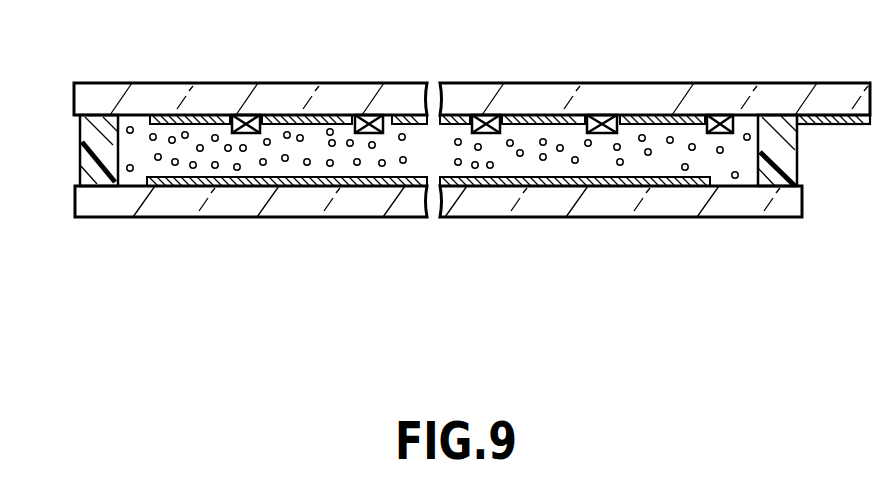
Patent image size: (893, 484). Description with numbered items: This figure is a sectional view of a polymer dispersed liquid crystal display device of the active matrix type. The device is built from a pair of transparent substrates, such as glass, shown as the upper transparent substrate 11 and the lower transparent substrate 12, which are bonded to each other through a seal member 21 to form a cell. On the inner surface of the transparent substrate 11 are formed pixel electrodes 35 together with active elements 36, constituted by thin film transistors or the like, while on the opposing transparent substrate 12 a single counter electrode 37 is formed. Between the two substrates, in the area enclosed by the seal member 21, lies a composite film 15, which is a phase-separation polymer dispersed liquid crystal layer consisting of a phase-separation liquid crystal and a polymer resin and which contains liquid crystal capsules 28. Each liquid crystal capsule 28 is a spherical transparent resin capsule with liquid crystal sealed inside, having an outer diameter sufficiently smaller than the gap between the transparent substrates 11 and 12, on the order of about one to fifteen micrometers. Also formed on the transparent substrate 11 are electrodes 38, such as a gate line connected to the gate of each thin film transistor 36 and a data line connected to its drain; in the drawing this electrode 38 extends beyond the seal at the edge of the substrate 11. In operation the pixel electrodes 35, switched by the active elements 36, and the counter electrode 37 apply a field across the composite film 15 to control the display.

The transparent substrate 11 is at (778, 95).
The transparent substrate 12 is at (717, 210).
The composite film 15 is at (312, 145).
The seal member 21 is at (90, 165).
The liquid crystal capsule 28 is at (262, 166).
The pixel electrode 35 is at (195, 118).
The active element 36 is at (255, 115).
The counter electrode 37 is at (360, 181).
The electrode 38 is at (827, 127).